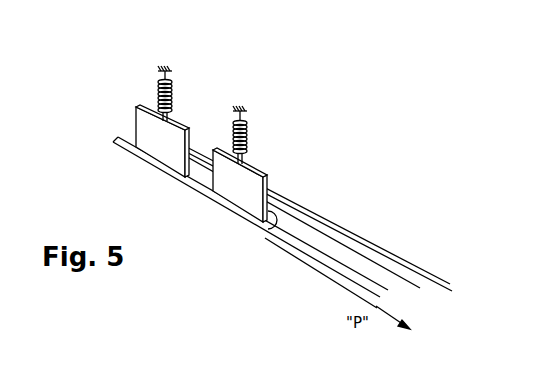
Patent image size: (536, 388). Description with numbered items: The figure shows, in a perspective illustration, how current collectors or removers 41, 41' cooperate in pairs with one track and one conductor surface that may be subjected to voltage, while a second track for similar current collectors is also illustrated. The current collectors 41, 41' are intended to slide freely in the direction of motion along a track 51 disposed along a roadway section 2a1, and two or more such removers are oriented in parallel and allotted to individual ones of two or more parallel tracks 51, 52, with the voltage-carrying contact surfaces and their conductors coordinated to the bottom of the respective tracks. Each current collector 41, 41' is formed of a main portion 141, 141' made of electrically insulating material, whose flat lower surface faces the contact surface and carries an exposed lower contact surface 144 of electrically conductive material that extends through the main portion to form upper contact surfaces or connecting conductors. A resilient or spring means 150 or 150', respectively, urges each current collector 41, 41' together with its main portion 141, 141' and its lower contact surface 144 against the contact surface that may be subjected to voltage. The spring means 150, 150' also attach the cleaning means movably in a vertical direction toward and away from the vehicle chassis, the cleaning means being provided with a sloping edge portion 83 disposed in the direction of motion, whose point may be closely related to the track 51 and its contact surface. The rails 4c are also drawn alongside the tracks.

The spring means 150 is at (179, 64).
The spring means 150' is at (247, 92).
The current collector 41 is at (223, 155).
The current collector 41' is at (123, 141).
The main portion 141 is at (223, 136).
The main portion 141' is at (100, 108).
The conveyor belt 4c is at (308, 203).
The track 51 is at (327, 224).
The track 52 is at (343, 267).
The roadway section 2a1 is at (266, 217).
The lower contact surface 144 is at (265, 228).
The sloping edge portion 83 is at (273, 224).